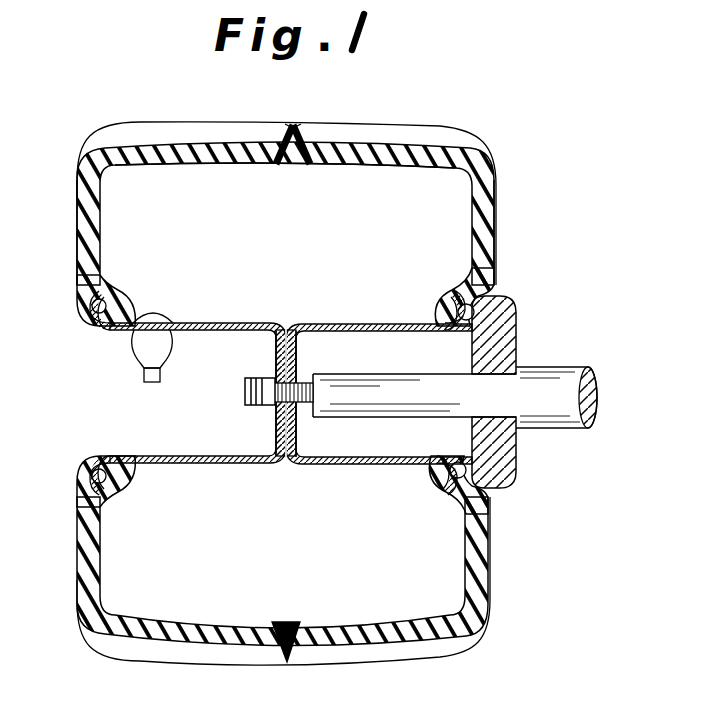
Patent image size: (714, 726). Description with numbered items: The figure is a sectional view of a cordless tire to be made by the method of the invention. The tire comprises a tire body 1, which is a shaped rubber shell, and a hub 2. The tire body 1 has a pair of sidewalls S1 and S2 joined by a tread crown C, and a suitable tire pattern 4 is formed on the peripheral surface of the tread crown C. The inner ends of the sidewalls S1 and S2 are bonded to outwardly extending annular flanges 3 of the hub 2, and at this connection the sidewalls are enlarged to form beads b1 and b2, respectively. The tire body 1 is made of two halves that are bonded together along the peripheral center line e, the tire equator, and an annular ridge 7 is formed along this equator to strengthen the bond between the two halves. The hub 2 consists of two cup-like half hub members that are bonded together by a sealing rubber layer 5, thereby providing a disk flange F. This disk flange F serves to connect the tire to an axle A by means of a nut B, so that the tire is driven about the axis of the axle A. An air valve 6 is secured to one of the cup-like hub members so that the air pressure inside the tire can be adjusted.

The tire body 1 is at (496, 214).
The hub 2 is at (384, 325).
The annular flanges 3 is at (508, 298).
The tire pattern 4 is at (82, 150).
The sealing rubber layer 5 is at (292, 326).
The air valve 6 is at (164, 320).
The annular ridge 7 is at (305, 133).
The tread crown c is at (226, 154).
The peripheral center line e is at (291, 126).
The sidewall S1 is at (90, 236).
The sidewall S2 is at (490, 272).
The bead b1 is at (118, 297).
The bead b2 is at (458, 302).
The disk flange F is at (280, 350).
The axle A is at (548, 382).
The nut B is at (260, 410).